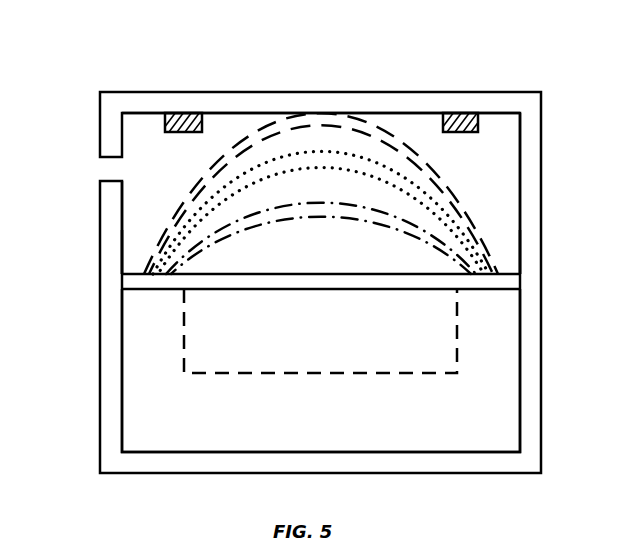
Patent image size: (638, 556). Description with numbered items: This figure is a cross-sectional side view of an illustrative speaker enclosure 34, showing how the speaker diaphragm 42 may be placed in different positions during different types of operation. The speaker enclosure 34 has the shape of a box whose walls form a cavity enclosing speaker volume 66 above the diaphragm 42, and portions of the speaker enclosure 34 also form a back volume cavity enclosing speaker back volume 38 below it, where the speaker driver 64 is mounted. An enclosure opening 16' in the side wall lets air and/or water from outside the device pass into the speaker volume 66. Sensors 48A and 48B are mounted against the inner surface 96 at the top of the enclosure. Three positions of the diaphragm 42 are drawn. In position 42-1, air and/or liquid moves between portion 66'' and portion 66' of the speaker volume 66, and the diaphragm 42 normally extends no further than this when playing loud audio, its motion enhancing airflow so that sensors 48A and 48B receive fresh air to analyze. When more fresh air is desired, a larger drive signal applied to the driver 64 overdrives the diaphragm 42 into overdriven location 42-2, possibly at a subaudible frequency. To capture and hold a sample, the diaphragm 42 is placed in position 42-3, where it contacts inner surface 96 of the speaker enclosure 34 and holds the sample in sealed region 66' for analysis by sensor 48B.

The enclosure opening 16' is at (54, 169).
The speaker enclosure 34 is at (527, 403).
The speaker back volume 38 is at (150, 410).
The speaker diaphragm 42 is at (375, 283).
The diaphragm position 42-1 is at (300, 212).
The overdriven location 42-2 is at (325, 157).
The sample-capturing position 42-3 is at (272, 123).
The sensor 48A is at (178, 133).
The sensor 48B is at (462, 133).
The speaker driver 64 is at (183, 317).
The speaker volume 66 is at (308, 250).
The speaker volume portion 66' is at (549, 193).
The speaker volume portion 66'' is at (79, 227).
The inner surface 96 is at (407, 117).